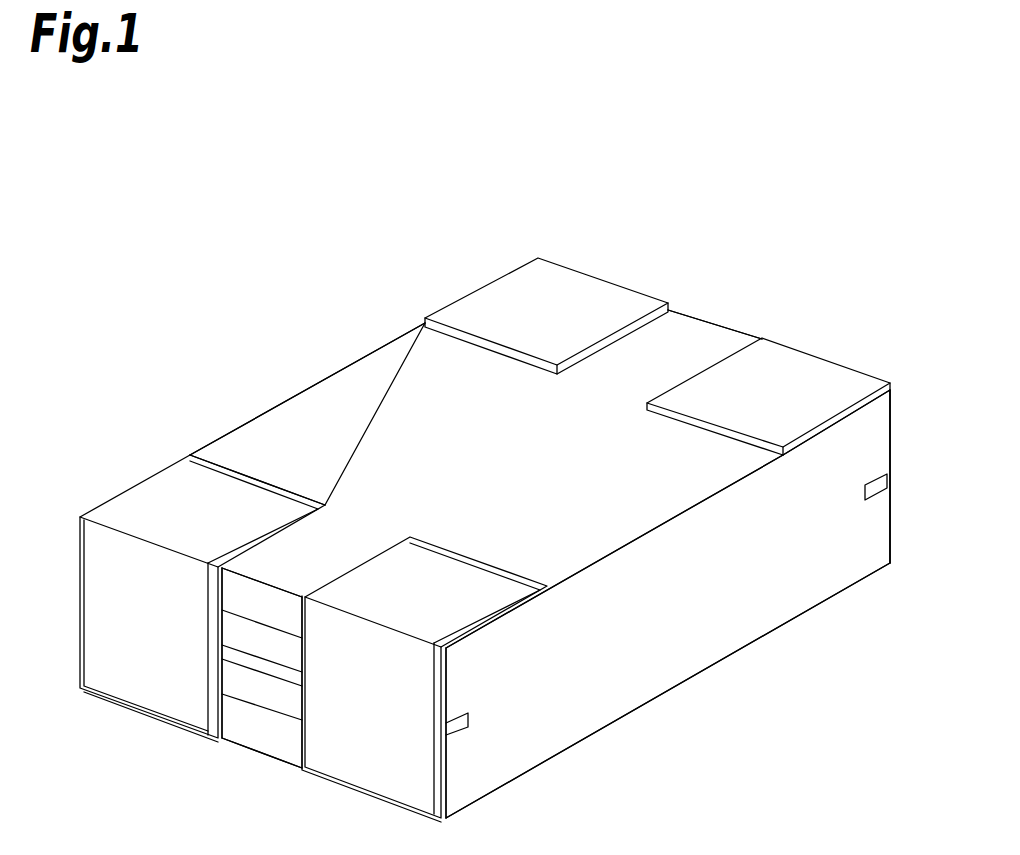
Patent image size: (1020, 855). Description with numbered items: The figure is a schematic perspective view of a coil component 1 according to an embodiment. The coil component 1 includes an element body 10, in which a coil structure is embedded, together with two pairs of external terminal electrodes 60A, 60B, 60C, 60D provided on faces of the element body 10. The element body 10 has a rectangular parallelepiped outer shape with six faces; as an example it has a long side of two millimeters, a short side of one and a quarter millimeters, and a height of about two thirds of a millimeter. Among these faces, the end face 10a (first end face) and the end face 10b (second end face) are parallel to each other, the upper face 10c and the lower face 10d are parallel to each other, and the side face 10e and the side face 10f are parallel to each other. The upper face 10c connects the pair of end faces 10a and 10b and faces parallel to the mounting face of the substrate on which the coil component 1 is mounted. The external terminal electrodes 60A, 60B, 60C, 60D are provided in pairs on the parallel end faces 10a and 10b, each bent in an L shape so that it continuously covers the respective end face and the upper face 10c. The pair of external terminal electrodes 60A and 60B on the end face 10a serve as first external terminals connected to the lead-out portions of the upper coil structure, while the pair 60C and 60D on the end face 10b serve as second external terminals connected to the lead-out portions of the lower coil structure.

The coil component 1 is at (207, 232).
The element body 10 is at (360, 381).
The end face 10a is at (262, 725).
The end face 10b is at (695, 345).
The upper face 10c is at (412, 348).
The lower face 10d is at (548, 732).
The side face 10e is at (763, 603).
The side face 10f is at (293, 425).
The external terminal electrode 60A is at (157, 498).
The external terminal electrode 60B is at (447, 572).
The external terminal electrode 60C is at (588, 291).
The external terminal electrode 60D is at (826, 372).